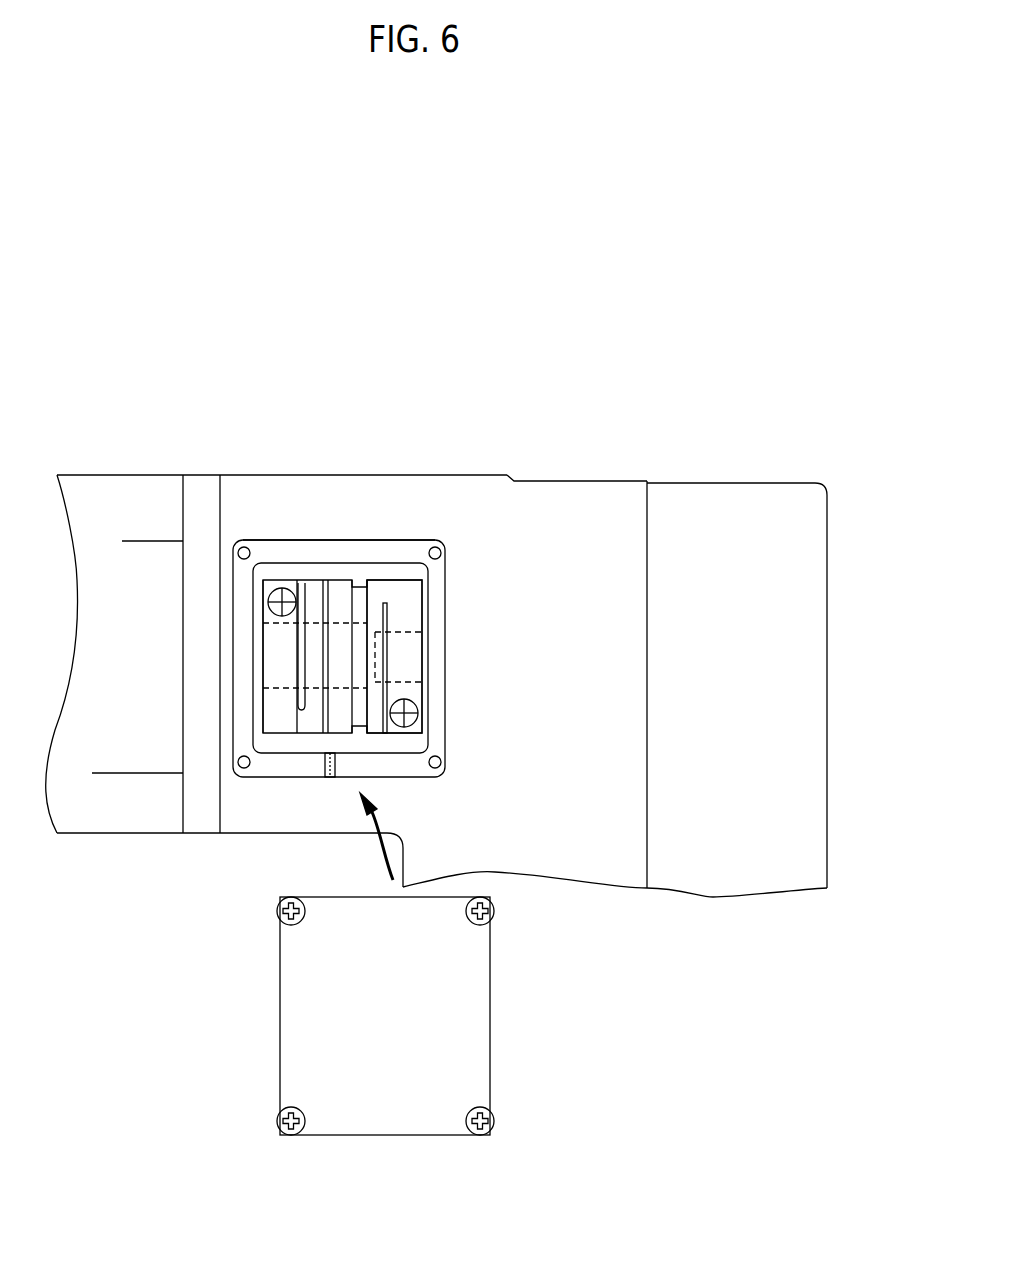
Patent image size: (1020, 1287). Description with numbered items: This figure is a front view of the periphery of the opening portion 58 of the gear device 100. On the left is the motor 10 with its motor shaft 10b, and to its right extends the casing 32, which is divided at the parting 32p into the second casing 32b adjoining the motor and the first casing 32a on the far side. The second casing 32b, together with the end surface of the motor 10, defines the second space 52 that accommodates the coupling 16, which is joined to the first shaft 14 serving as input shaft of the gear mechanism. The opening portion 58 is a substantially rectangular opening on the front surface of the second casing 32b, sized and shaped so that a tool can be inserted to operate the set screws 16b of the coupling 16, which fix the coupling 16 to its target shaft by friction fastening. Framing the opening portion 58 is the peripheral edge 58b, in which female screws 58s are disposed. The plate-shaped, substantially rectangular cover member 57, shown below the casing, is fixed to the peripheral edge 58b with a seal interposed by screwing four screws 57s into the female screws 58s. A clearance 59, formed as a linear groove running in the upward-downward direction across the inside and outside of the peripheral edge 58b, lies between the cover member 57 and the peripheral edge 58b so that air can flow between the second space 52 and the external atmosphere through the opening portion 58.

The gear device 100 is at (727, 331).
The motor 10 is at (148, 500).
The motor shaft 10b is at (263, 633).
The casing 32 is at (603, 453).
The first casing 32a is at (750, 495).
The second casing 32b is at (537, 488).
The parting 32p is at (650, 483).
The opening portion 58 is at (358, 582).
The peripheral edge 58b is at (435, 632).
The female screws 58s is at (443, 763).
The coupling 16 is at (400, 590).
The set screws 16b is at (286, 596).
The first shaft 14 is at (398, 632).
The second space 52 is at (367, 512).
The clearance 59 is at (327, 778).
The cover member 57 is at (472, 985).
The screws 57s is at (277, 1118).